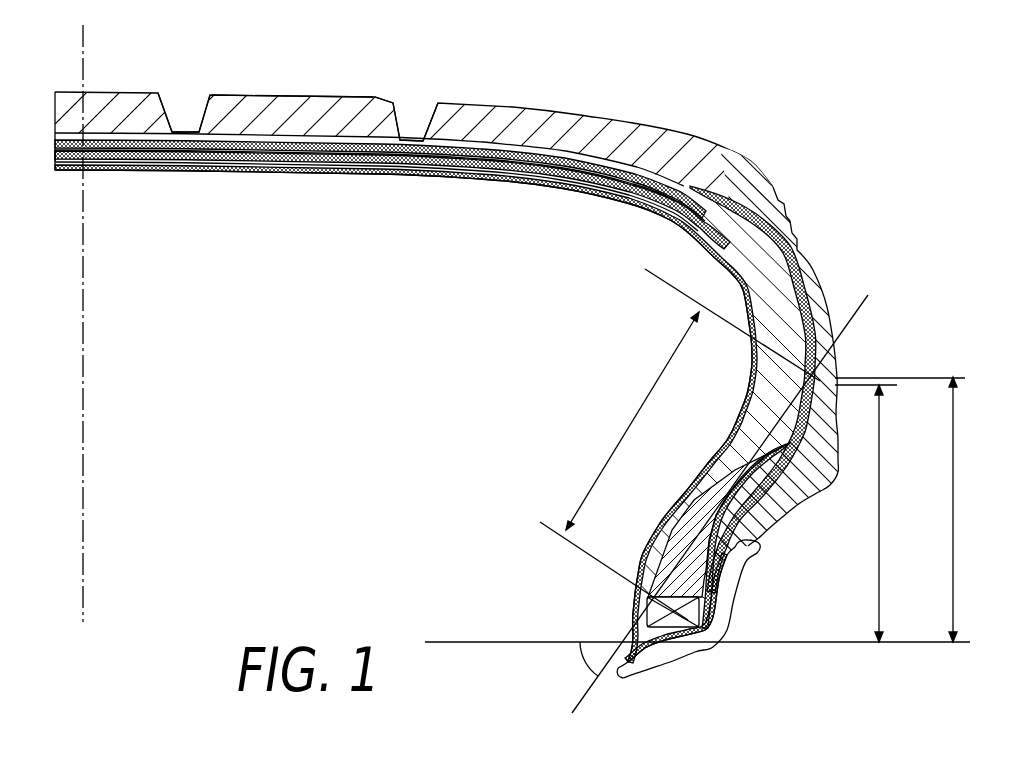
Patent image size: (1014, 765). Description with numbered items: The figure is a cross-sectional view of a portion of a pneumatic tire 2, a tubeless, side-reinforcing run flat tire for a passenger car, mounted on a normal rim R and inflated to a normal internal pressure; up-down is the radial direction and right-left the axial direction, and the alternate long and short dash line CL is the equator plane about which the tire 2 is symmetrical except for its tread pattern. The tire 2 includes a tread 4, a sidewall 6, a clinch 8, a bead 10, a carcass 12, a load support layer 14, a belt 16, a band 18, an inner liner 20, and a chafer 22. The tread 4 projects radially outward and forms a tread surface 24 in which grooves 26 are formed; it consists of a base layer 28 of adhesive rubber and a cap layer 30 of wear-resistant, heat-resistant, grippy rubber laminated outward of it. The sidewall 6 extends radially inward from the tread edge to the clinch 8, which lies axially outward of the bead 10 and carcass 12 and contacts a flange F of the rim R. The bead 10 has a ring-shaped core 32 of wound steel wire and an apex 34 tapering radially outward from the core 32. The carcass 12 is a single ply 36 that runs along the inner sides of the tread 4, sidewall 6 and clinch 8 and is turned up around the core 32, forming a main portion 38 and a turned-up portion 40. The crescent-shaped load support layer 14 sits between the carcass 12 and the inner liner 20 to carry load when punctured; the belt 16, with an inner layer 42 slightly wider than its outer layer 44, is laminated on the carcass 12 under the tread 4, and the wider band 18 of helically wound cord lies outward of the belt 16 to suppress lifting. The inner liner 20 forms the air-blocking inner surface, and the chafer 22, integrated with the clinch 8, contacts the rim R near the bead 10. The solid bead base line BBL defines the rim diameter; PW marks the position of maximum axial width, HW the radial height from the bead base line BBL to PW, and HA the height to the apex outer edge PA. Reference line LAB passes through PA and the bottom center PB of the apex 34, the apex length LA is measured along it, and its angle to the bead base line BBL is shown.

The pneumatic tire 2 is at (897, 75).
The tread 4 is at (513, 97).
The sidewall 6 is at (846, 287).
The clinch 8 is at (806, 517).
The bead 10 is at (828, 583).
The carcass 12 is at (204, 178).
The load support layer 14 is at (742, 280).
The belt 16 is at (302, 176).
The band 18 is at (352, 142).
The inner liner 20 is at (418, 163).
The chafer 22 is at (633, 622).
The tread surface 24 is at (285, 92).
The groove 26 is at (170, 92).
The base layer 28 is at (565, 150).
The cap layer 30 is at (632, 133).
The core 32 is at (690, 614).
The apex 34 is at (650, 600).
The ply 36 is at (403, 416).
The main portion 38 is at (757, 232).
The turned-up portion 40 is at (831, 294).
The inner layer 42 is at (328, 169).
The outer layer 44 is at (360, 160).
The equator plane CL is at (83, 465).
The bead base line BBL is at (455, 646).
The maximum width position PW is at (840, 377).
The apex height HA is at (878, 513).
The reference height HW is at (977, 509).
The apex length LA is at (632, 421).
The reference line LAB is at (868, 300).
The outer edge of the apex PA is at (805, 382).
The center of the bottom of the apex PB is at (660, 602).
The flange F is at (732, 578).
The rim R is at (678, 676).